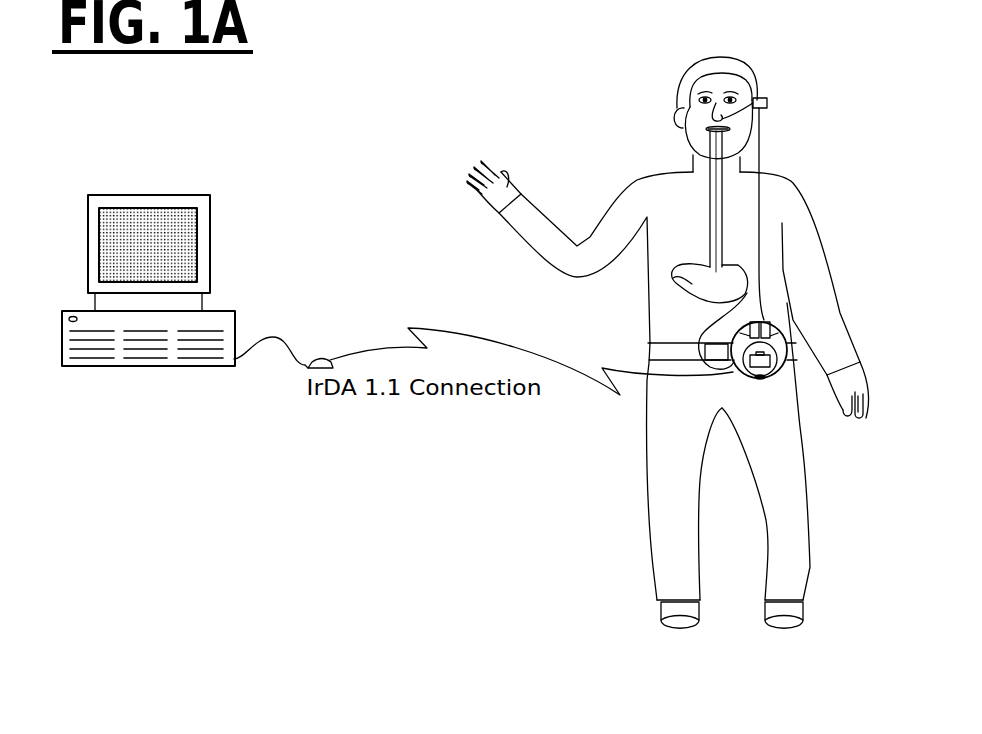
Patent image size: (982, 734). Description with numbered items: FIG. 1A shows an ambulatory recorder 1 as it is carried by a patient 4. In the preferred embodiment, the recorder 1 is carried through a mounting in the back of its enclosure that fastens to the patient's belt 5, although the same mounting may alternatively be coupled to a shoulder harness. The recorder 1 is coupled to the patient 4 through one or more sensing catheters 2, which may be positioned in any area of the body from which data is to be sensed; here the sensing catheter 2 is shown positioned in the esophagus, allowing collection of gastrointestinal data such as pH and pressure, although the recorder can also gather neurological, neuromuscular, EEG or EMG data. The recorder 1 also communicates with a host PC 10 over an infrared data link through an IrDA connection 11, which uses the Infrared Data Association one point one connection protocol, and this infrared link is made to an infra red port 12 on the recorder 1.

The ambulatory recorder 1 is at (766, 321).
The sensing catheter 2 is at (762, 228).
The patient 4 is at (702, 220).
The patient's belt 5 is at (663, 343).
The host PC 10 is at (153, 193).
The IrDA connection 11 is at (325, 360).
The infra red port 12 is at (762, 381).